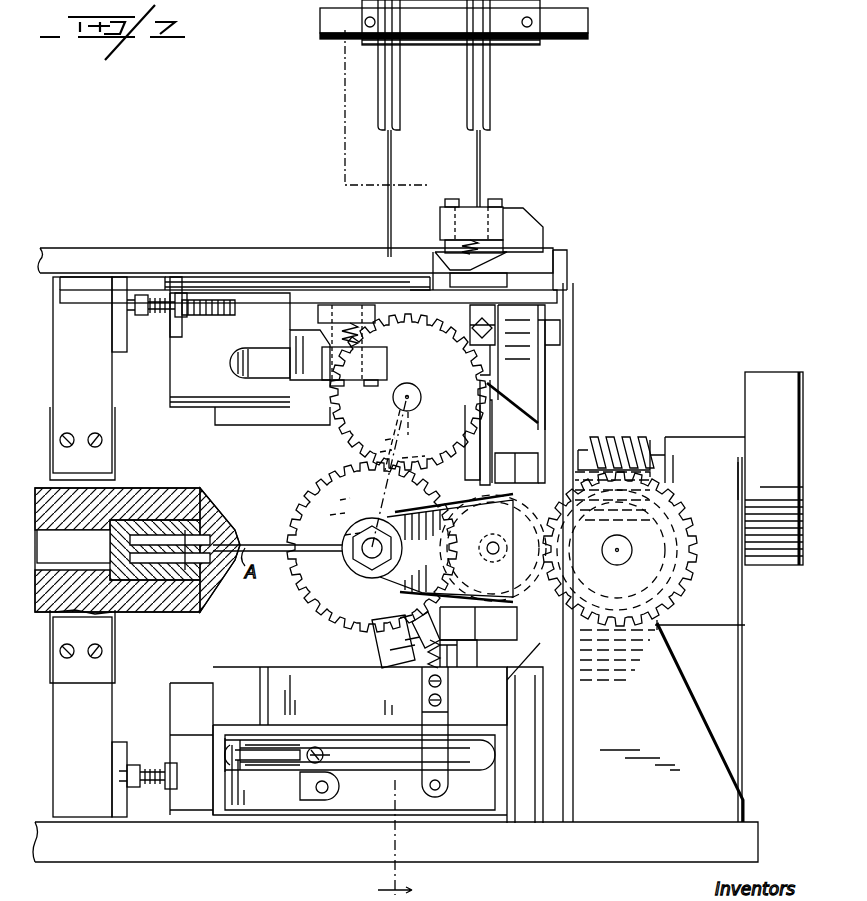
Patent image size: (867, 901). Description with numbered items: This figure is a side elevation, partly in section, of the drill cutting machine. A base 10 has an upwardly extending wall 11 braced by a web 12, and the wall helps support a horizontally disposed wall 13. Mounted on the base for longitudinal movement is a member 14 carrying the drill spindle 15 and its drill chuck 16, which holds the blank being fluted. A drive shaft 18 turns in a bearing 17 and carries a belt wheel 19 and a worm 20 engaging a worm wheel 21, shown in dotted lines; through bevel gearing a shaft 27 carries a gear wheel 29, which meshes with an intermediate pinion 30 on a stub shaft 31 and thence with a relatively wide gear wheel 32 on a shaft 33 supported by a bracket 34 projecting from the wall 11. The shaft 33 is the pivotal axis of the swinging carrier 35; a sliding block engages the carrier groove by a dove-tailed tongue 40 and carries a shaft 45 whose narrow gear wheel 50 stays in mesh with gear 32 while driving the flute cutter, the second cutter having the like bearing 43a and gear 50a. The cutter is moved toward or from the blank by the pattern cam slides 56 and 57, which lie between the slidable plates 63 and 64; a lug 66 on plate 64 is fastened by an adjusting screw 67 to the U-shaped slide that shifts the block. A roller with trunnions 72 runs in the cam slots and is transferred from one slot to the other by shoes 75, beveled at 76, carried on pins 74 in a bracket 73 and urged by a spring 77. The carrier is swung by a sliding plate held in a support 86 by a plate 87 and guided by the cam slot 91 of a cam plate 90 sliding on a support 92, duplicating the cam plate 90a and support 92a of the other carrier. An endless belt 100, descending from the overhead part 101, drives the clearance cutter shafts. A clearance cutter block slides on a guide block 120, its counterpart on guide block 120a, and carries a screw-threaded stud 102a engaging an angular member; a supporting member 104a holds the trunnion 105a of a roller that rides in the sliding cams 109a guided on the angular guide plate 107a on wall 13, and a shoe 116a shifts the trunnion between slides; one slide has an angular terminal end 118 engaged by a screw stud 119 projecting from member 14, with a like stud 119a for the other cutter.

The base 10 is at (540, 848).
The upwardly extending wall 11 is at (560, 388).
The web 12 is at (690, 748).
The horizontally disposed wall 13 is at (272, 250).
The member 14 is at (123, 333).
The drill spindle 15 is at (73, 546).
The drill chuck 16 is at (228, 535).
The bearing 17 is at (730, 687).
The drive shaft 18 is at (657, 448).
The belt wheel 19 is at (760, 403).
The worm 20 is at (608, 437).
The worm wheel 21 is at (680, 520).
The shaft 27 is at (612, 562).
The gear wheel 29 is at (662, 721).
The intermediate pinion 30 is at (522, 498).
The stub shaft 31 is at (489, 546).
The gear wheel 32 is at (320, 603).
The shaft 33 is at (365, 546).
The bracket 34 is at (382, 520).
The carrier 35 is at (492, 450).
The dove-tailed tongue 40 is at (468, 436).
The bearing 43a is at (385, 648).
The shaft 45 is at (421, 400).
The gear wheel 50 is at (360, 428).
The gear wheel 50a is at (368, 656).
The pattern cam slide 56 is at (560, 298).
The cam plate 57 is at (565, 290).
The plate 63 is at (500, 278).
The plate 64 is at (540, 350).
The lug 66 is at (468, 332).
The adjusting screw 67 is at (478, 352).
The trunnions 72 is at (482, 256).
The bracket 73 is at (525, 222).
The pins 74 is at (453, 199).
The shoe 75 is at (340, 305).
The beveled end 76 is at (420, 280).
The spring 77 is at (468, 240).
The support 86 is at (575, 388).
The plate 87 is at (560, 423).
The cam plate 90 is at (188, 373).
The cam plate 90a is at (195, 695).
The cam slot 91 is at (250, 378).
The support 92 is at (270, 418).
The support 92a is at (265, 682).
The endless belt 100 is at (388, 157).
The top rail 101 is at (589, 19).
The screw-threaded stud 102a is at (462, 660).
The supporting member 104a is at (440, 724).
The trunnion 105a is at (436, 792).
The angular guide plate 107a is at (345, 805).
The sliding cam 109a is at (365, 758).
The shoe 116a is at (290, 822).
The angular terminal end 118 is at (183, 300).
The screw stud 119 is at (150, 295).
The screw stud 119a is at (148, 790).
The guide block 120 is at (525, 463).
The guide block 120a is at (455, 622).